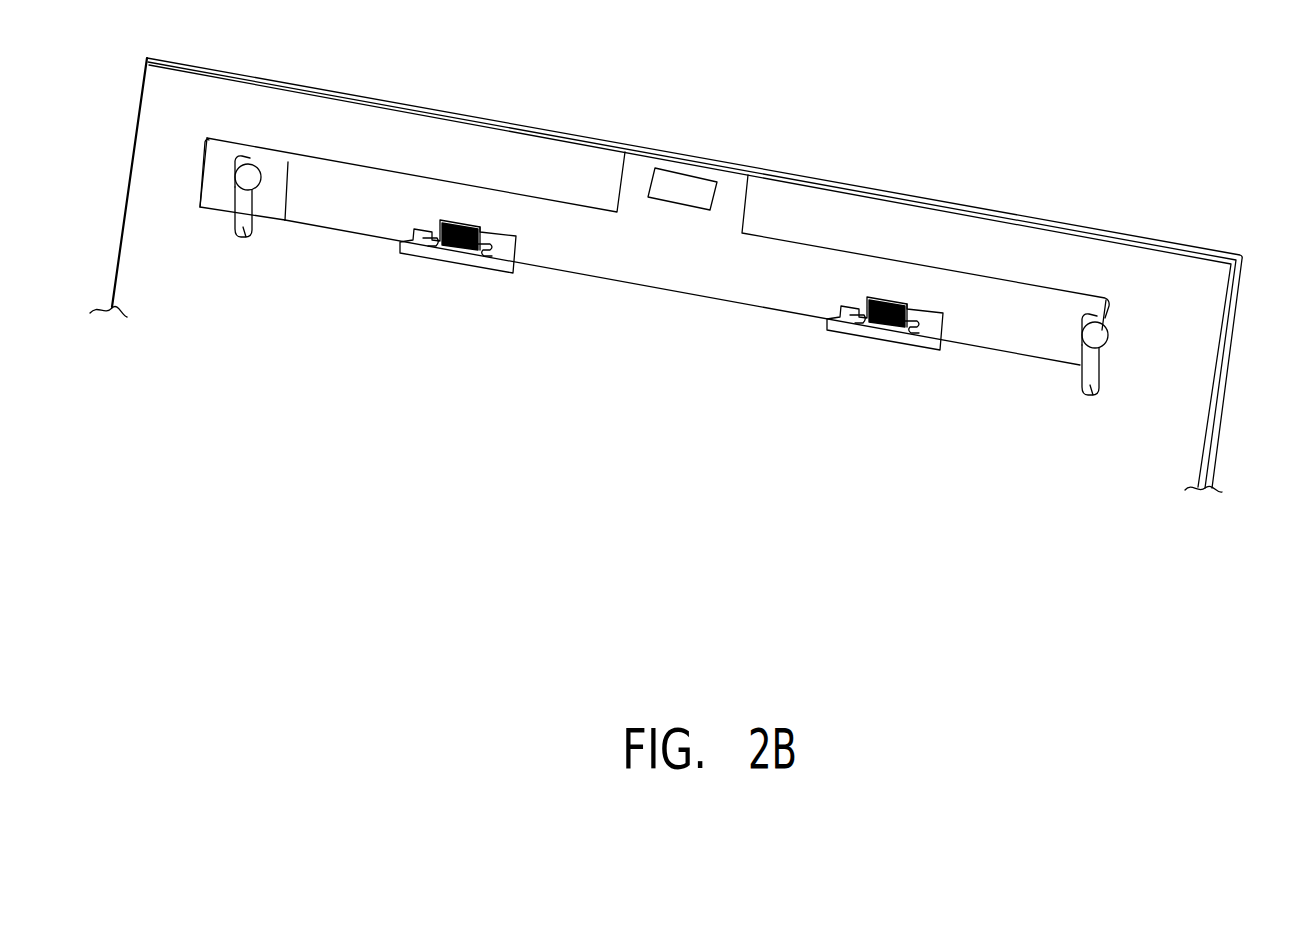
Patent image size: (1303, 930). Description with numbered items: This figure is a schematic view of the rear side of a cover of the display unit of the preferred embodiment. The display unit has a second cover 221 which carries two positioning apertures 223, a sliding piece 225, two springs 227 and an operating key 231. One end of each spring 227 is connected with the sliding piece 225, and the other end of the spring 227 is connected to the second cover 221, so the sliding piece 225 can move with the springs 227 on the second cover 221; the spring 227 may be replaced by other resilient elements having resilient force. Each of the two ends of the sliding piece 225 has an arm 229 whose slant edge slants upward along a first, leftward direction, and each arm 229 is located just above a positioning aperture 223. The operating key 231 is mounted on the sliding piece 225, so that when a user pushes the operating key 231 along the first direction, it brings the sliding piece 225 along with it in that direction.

The second cover 221 is at (1202, 327).
The positioning aperture 223 is at (243, 238).
The sliding piece 225 is at (662, 272).
The spring 227 is at (457, 250).
The arm 229 is at (233, 207).
The operating key 231 is at (687, 185).